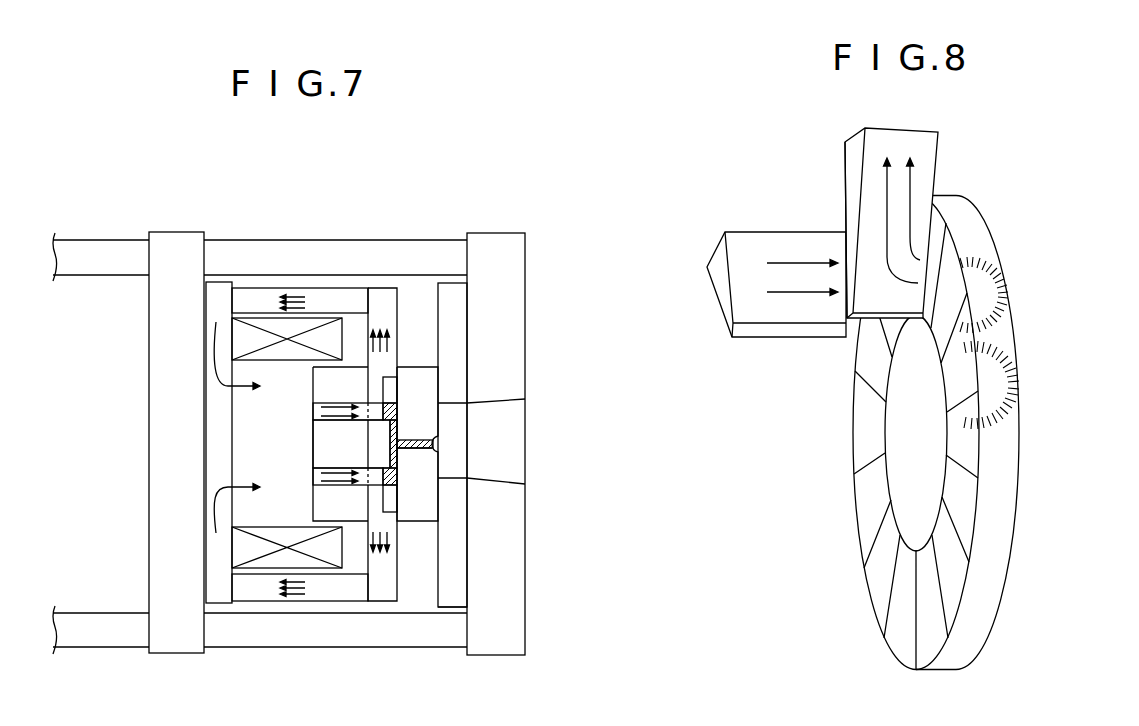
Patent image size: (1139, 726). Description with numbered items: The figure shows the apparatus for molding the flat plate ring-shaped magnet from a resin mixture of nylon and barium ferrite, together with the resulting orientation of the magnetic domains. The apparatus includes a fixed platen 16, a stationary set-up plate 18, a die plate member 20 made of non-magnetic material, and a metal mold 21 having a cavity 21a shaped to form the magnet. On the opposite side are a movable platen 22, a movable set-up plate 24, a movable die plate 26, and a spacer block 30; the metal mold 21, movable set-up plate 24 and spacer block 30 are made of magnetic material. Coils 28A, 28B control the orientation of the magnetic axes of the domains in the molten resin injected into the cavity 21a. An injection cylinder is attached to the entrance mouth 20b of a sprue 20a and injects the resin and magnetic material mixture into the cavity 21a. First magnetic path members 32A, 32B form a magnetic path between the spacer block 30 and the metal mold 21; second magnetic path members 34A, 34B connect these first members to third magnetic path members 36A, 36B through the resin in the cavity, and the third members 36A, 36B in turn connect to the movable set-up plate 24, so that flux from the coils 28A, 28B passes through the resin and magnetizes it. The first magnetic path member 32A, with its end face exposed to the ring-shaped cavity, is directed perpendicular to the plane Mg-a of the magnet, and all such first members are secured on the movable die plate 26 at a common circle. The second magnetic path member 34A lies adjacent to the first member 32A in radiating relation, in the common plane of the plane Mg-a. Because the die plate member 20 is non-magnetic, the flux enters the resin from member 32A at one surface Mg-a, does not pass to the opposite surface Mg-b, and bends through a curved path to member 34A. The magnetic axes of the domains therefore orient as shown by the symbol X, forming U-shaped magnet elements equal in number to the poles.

In FIG. 7, the fixed platen 16 is at (500, 262).
In FIG. 7, the stationary set-up plate 18 is at (452, 583).
In FIG. 7, the die plate member 20 is at (427, 392).
In FIG. 7, the sprue 20a is at (417, 449).
In FIG. 7, the entrance mouth 20b is at (434, 443).
In FIG. 7, the metal mold 21 is at (392, 506).
In FIG. 7, the cavity 21a is at (390, 440).
In FIG. 7, the movable platen 22 is at (178, 247).
In FIG. 7, the movable set-up plate 24 is at (222, 292).
In FIG. 7, the movable die plate 26 is at (355, 380).
In FIG. 7, the coil 28A is at (273, 326).
In FIG. 7, the coil 28B is at (328, 553).
In FIG. 7, the spacer block 30 is at (285, 437).
In FIG. 7, the first magnetic path member 32A is at (362, 403).
In FIG. 8, the first magnetic path member 32A is at (748, 242).
In FIG. 7, the first magnetic path member 32B is at (362, 486).
In FIG. 7, the second magnetic path member 34A is at (382, 296).
In FIG. 8, the second magnetic path member 34A is at (855, 163).
In FIG. 7, the second magnetic path member 34B is at (380, 587).
In FIG. 7, the third magnetic path member 36A is at (327, 292).
In FIG. 7, the third magnetic path member 36B is at (262, 592).
In FIG. 8, the plane of the magnet Mg-a is at (963, 508).
In FIG. 8, the opposite surface of the magnet Mg-b is at (1017, 460).
In FIG. 8, the orientation of magnetic axes X is at (1002, 297).